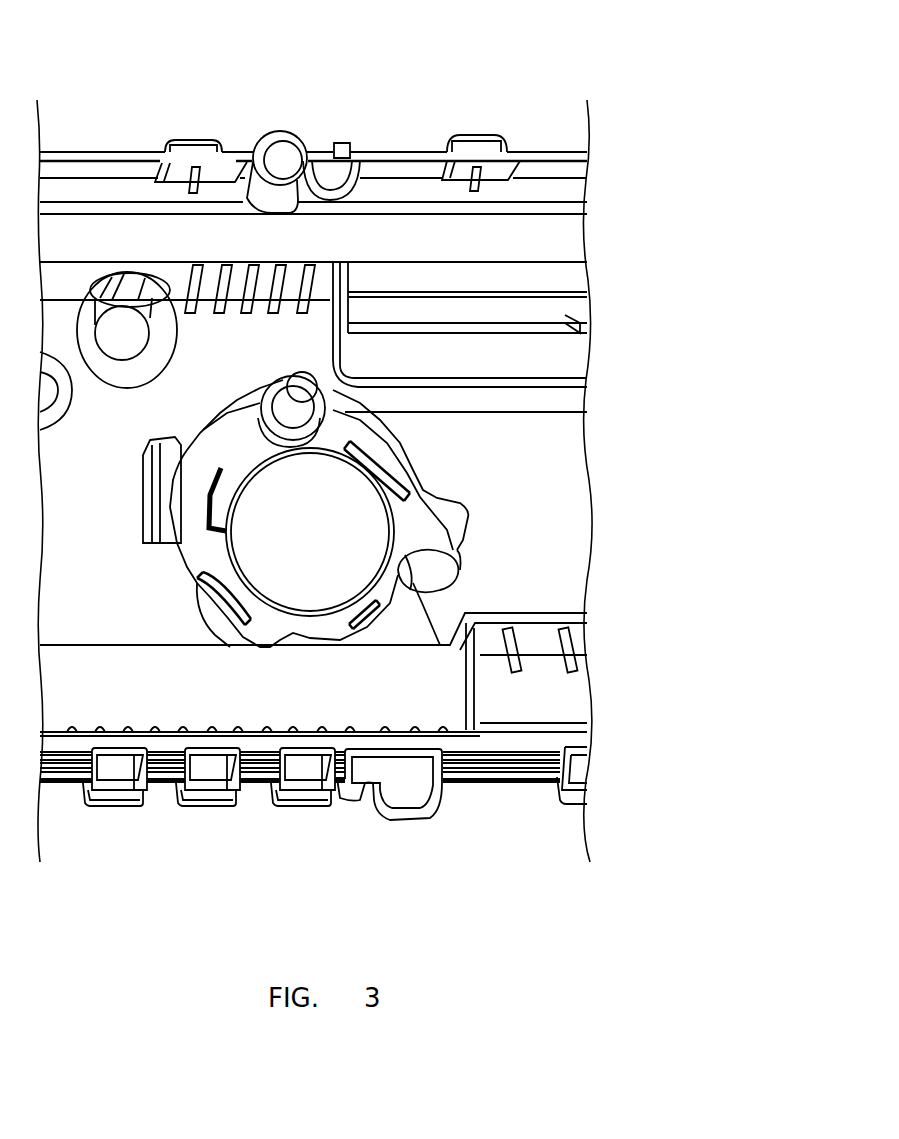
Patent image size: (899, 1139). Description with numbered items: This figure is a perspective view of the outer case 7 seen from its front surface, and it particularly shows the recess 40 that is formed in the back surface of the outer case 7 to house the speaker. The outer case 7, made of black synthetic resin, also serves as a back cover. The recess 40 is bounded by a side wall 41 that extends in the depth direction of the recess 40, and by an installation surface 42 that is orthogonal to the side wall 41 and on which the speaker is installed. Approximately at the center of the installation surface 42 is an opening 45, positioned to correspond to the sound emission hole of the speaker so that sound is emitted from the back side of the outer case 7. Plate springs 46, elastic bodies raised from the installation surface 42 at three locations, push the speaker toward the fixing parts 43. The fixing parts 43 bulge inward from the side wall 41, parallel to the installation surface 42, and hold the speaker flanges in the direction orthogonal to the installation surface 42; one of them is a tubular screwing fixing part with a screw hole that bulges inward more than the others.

The outer case 7 is at (403, 150).
The recess 40 is at (292, 600).
The side wall 41 is at (250, 448).
The installation surface 42 is at (175, 585).
The fixing parts 43 is at (447, 863).
The opening 45 is at (318, 605).
The plate springs 46 is at (197, 507).